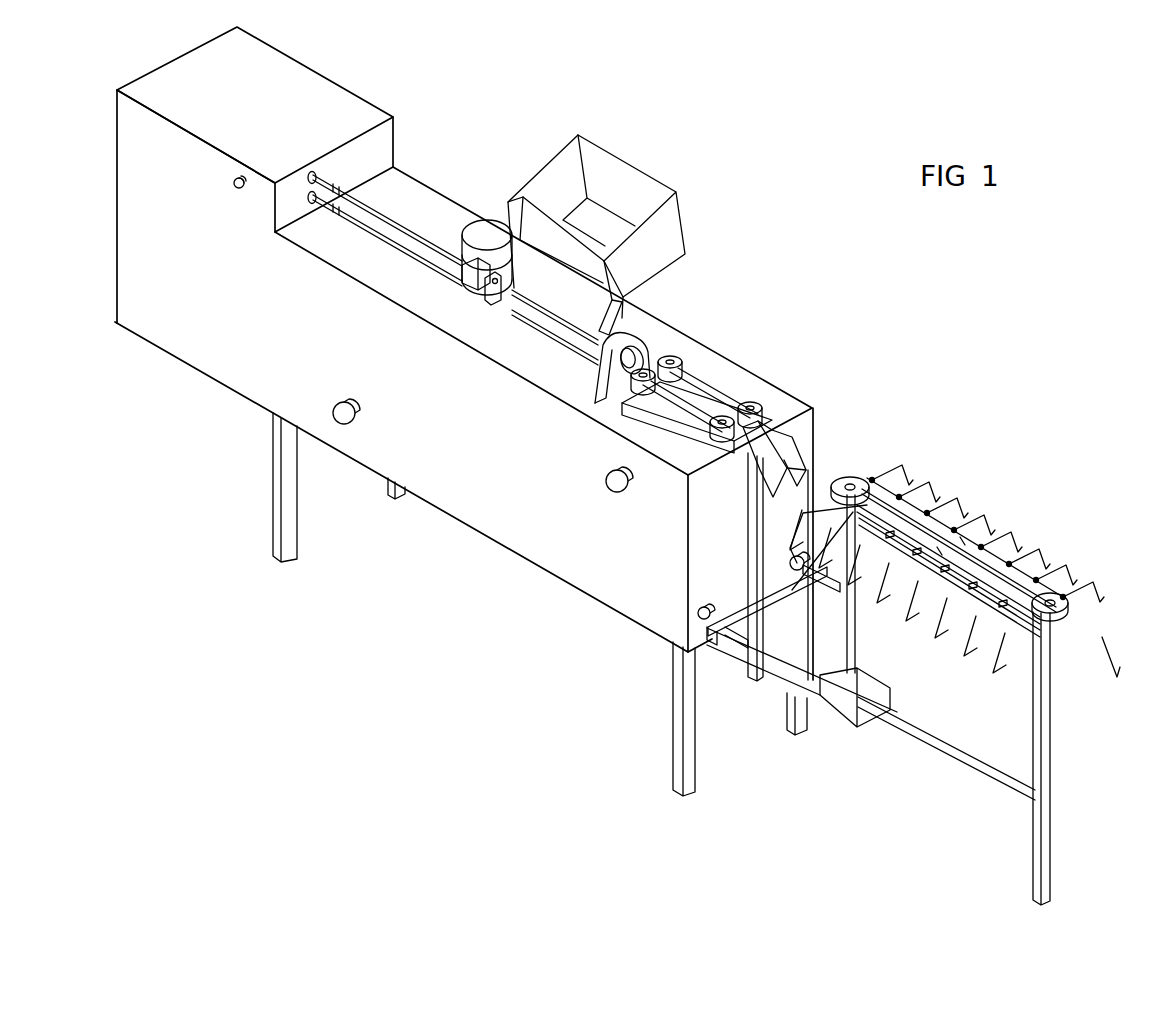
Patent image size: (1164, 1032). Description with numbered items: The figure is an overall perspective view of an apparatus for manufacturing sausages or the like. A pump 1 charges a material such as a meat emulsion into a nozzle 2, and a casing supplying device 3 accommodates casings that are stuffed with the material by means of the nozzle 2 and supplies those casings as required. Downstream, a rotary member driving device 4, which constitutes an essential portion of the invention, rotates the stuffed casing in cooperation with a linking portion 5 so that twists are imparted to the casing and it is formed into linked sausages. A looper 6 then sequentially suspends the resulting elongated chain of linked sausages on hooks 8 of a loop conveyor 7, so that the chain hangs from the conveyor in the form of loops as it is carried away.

The pump 1 is at (498, 212).
The nozzle 2 is at (375, 212).
The casing supplying device 3 is at (662, 175).
The rotary member driving device 4 is at (643, 330).
The linking portion 5 is at (733, 377).
The looper 6 is at (763, 444).
The loop conveyor 7 is at (1028, 540).
The hooks 8 is at (921, 484).